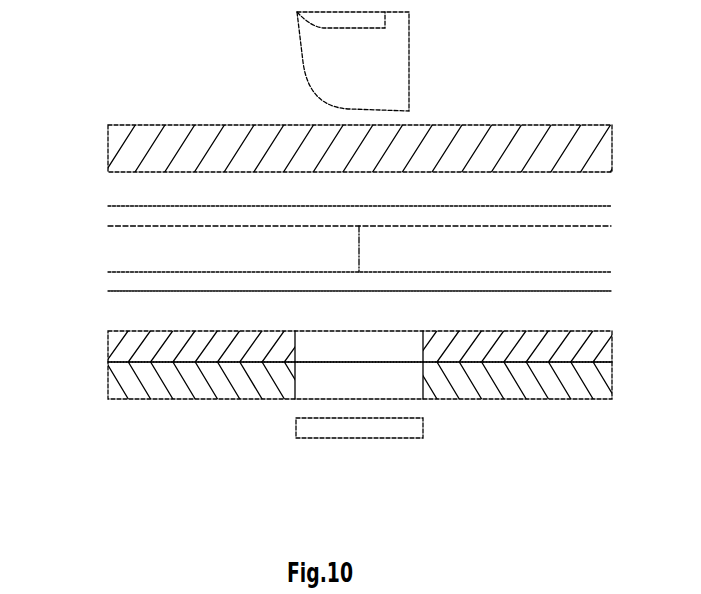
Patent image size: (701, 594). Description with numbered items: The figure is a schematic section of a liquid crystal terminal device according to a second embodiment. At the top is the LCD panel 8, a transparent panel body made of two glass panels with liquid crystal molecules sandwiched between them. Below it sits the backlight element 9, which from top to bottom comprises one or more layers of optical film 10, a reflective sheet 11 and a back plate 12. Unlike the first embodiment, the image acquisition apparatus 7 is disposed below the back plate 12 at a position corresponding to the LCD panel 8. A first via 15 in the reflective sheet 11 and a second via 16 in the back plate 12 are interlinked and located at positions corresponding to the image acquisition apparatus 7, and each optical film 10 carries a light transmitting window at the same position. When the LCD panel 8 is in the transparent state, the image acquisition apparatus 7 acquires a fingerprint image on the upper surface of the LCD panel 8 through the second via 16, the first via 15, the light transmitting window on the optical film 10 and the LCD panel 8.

The image acquisition apparatus 7 is at (410, 430).
The LCD panel 8 is at (130, 155).
The backlight element 9 is at (57, 258).
The optical film 10 is at (128, 291).
The reflective sheet 11 is at (135, 352).
The back plate 12 is at (135, 382).
The first via 15 is at (366, 350).
The second via 16 is at (382, 377).